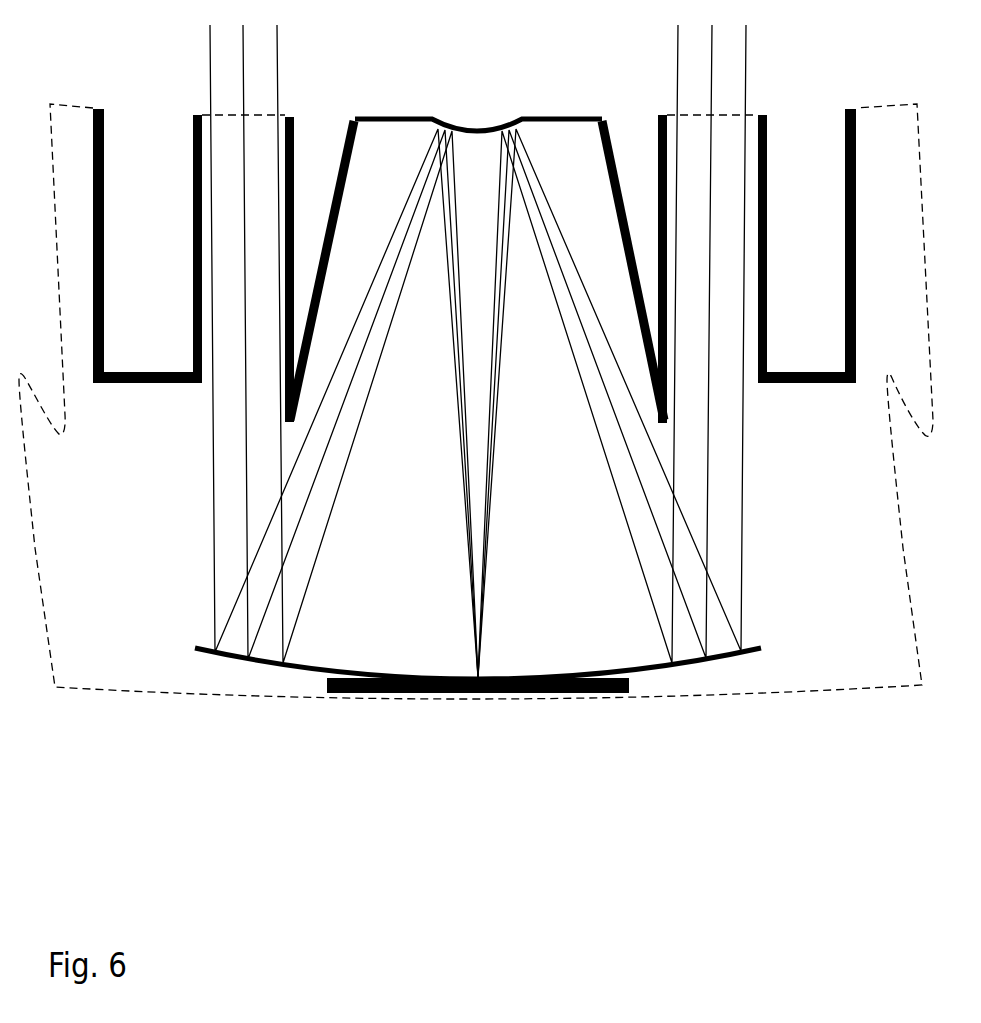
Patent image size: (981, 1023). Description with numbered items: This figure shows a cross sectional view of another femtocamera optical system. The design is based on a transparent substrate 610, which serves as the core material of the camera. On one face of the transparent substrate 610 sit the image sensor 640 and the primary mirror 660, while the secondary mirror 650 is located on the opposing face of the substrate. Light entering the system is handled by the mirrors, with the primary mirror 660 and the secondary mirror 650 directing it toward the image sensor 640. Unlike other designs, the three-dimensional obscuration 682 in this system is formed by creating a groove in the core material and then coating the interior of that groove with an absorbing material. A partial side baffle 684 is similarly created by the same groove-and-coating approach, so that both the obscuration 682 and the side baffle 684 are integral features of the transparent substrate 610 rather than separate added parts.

The transparent substrate 610 is at (803, 526).
The image sensor 640 is at (368, 694).
The secondary mirror 650 is at (490, 128).
The primary mirror 660 is at (263, 667).
The three-dimensional obscuration 682 is at (338, 188).
The partial side baffle 684 is at (193, 218).